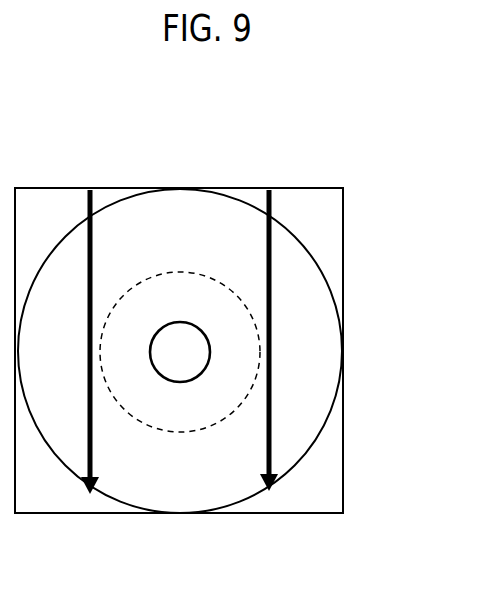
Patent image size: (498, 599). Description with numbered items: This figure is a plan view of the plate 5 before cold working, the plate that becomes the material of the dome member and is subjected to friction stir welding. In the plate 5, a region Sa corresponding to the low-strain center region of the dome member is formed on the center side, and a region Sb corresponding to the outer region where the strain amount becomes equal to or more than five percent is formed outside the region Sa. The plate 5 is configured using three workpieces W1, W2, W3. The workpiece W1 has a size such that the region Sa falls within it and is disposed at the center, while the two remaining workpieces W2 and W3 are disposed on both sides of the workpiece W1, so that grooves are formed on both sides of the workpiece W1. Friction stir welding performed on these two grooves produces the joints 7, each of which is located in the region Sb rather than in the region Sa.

The plate 5 is at (348, 224).
The joint 7 is at (83, 199).
The region Sa is at (166, 295).
The region Sb is at (213, 228).
The workpiece W1 is at (125, 515).
The workpiece W2 is at (52, 515).
The workpiece W3 is at (312, 515).